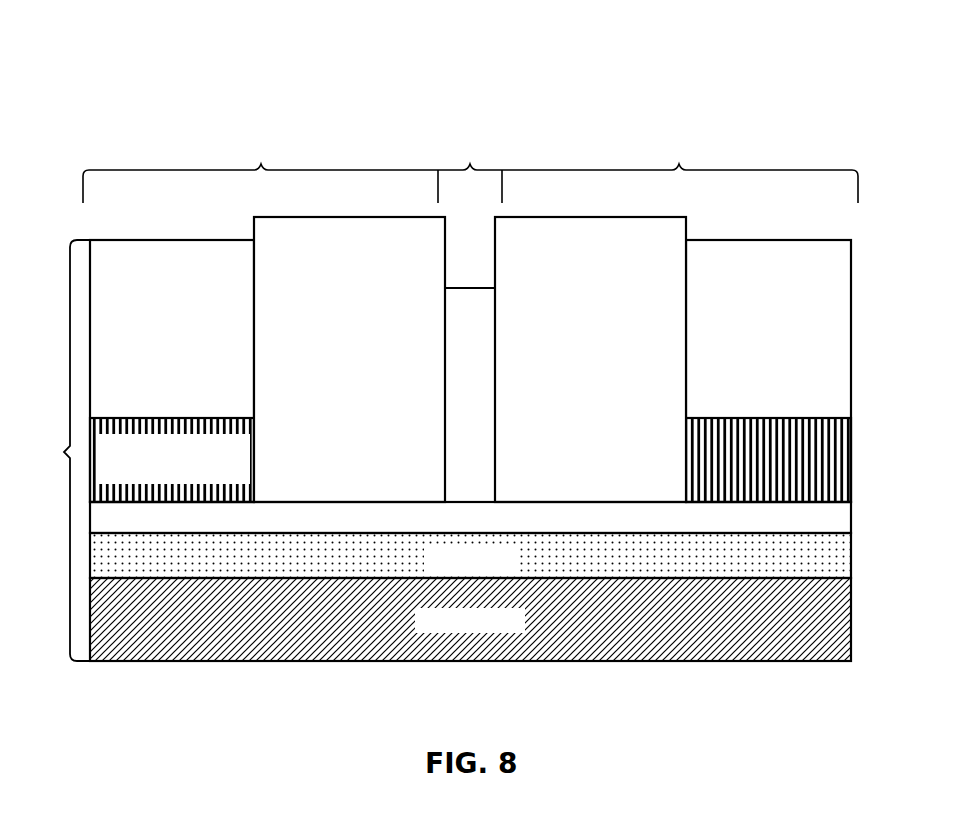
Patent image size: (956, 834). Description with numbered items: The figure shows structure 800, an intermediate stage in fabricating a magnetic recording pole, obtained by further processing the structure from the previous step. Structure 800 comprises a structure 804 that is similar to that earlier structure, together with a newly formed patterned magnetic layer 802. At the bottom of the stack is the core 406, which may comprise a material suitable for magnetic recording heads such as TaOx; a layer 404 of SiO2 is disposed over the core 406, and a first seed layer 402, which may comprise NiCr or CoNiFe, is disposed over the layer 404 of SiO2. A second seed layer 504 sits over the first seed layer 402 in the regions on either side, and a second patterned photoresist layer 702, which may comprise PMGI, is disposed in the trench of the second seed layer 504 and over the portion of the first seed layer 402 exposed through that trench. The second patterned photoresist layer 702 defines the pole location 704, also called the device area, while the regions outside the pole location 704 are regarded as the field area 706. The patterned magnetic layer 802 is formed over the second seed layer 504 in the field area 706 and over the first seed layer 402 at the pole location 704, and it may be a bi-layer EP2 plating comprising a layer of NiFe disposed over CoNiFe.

The structure 800 is at (466, 64).
The field area 706 is at (470, 151).
The pole location 704 is at (470, 127).
The structure 804 is at (60, 450).
The patterned magnetic layer 802 is at (470, 371).
The second seed layer 504 is at (797, 393).
The second patterned photoresist layer 702 is at (470, 359).
The first seed layer 402 is at (470, 517).
The layer of SiO2 404 is at (470, 555).
The core 406 is at (470, 619).